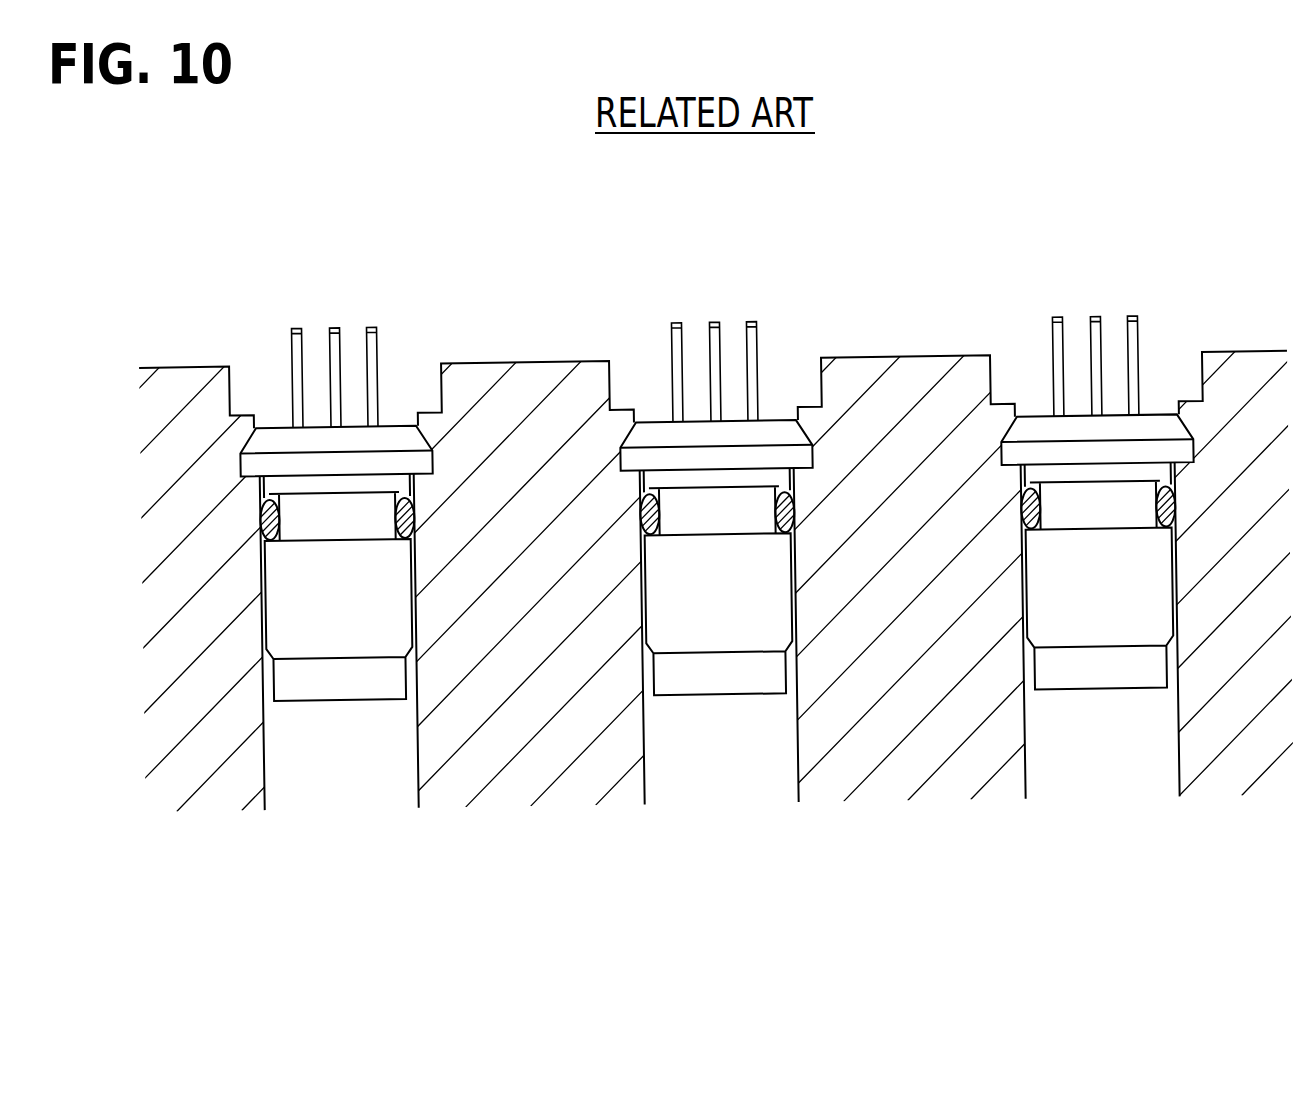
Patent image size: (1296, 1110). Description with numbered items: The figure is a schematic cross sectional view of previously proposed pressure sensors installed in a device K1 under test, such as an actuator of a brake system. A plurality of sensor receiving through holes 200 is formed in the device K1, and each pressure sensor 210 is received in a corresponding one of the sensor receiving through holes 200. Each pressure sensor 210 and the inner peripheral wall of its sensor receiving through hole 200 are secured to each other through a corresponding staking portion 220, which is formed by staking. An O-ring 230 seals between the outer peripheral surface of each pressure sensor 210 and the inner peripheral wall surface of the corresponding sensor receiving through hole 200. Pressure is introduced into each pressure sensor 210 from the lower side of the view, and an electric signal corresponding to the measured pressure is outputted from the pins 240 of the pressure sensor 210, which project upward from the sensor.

The device under test K1 is at (1248, 391).
The sensor receiving through hole 200 is at (265, 753).
The pressure sensor 210 is at (393, 437).
The staking portion 220 is at (245, 420).
The O-ring 230 is at (259, 513).
The pins 240 is at (313, 342).